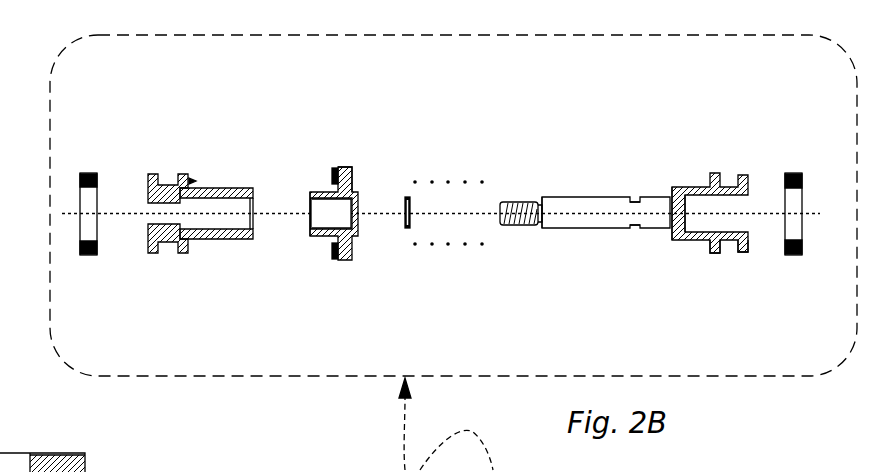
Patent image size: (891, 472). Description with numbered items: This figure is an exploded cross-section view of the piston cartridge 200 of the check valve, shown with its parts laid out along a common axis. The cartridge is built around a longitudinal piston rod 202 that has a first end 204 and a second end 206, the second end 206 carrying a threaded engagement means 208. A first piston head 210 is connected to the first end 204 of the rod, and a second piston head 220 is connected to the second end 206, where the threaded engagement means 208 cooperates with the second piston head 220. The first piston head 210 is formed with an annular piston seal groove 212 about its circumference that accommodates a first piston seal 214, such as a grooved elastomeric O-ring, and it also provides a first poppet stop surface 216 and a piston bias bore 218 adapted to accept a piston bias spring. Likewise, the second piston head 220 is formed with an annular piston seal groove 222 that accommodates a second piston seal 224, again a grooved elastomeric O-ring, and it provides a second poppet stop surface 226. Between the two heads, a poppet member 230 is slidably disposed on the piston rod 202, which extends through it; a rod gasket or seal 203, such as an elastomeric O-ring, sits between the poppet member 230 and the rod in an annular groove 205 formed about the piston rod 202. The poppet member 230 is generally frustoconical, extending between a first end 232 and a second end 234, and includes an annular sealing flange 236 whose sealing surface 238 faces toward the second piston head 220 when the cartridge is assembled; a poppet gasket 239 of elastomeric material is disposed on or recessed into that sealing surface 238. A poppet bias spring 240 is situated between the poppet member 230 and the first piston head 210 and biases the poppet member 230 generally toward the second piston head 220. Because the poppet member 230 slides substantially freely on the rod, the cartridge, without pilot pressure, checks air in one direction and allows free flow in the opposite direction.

The piston cartridge 200 is at (817, 82).
The longitudinal piston rod 202 is at (585, 224).
The rod gasket or seal 203 is at (407, 232).
The first end 204 is at (716, 224).
The annular groove 205 is at (637, 229).
The second end 206 is at (523, 187).
The threaded engagement means 208 is at (528, 228).
The first piston head 210 is at (750, 247).
The annular piston seal groove 212 is at (721, 254).
The first piston seal 214 is at (795, 173).
The first poppet stop surface 216 is at (672, 190).
The piston bias bore 218 is at (740, 203).
The second piston head 220 is at (205, 210).
The annular piston seal groove 222 is at (167, 243).
The second piston seal 224 is at (83, 256).
The second poppet stop surface 226 is at (254, 240).
The poppet member 230 is at (345, 225).
The first end 232 is at (358, 193).
The second end 234 is at (312, 192).
The annular sealing flange 236 is at (343, 168).
The sealing surface 238 is at (332, 177).
The poppet gasket 239 is at (333, 252).
The poppet bias spring 240 is at (465, 249).